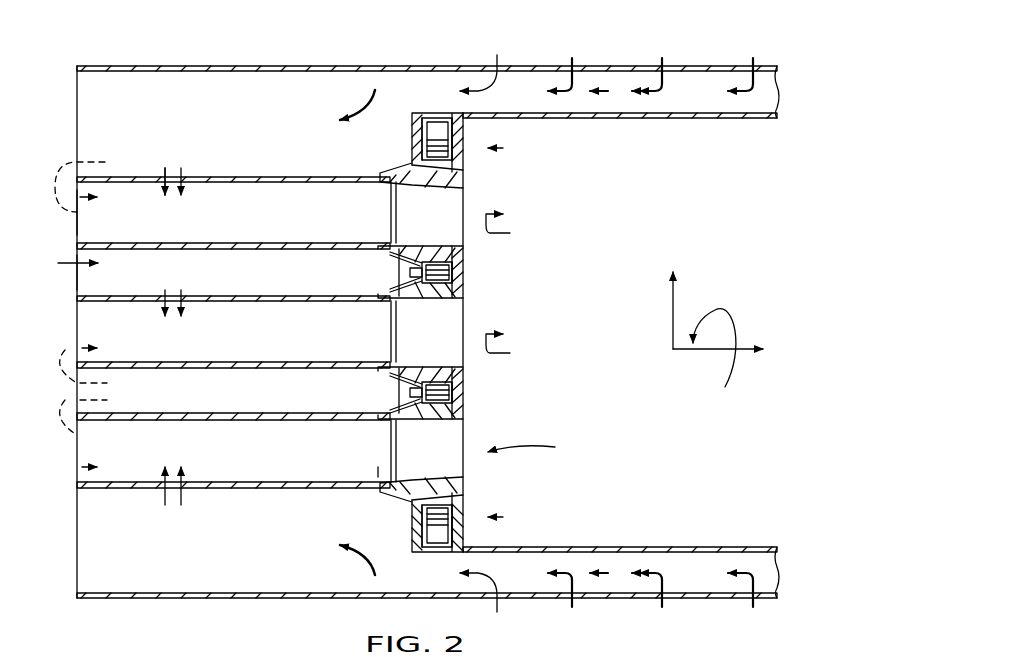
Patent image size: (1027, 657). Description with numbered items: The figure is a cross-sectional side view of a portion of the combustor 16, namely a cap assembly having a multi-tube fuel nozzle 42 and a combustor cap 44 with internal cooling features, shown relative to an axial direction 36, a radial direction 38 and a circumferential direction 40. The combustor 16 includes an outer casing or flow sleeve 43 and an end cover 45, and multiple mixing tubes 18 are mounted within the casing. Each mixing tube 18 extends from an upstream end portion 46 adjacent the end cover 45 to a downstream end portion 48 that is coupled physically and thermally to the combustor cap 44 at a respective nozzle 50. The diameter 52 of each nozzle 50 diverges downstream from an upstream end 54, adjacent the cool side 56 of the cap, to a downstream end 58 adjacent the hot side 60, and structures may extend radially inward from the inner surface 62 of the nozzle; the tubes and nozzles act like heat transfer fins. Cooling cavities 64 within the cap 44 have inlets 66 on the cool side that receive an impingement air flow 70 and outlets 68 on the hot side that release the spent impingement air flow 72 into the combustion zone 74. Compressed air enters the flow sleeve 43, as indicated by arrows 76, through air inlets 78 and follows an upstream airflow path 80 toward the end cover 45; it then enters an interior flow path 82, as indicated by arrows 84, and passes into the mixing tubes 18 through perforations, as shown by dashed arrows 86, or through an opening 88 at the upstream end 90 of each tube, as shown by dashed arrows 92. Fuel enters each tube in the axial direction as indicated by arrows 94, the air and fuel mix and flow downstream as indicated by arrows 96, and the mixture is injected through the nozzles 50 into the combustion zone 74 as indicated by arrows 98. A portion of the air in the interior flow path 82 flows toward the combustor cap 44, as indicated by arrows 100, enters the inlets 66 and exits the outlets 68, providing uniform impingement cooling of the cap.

The combustor 16 is at (110, 50).
The mixing tube 18 is at (222, 296).
The axial axis or direction 36 is at (717, 352).
The radial axis or direction 38 is at (675, 316).
The circumferential axis or direction 40 is at (737, 367).
The multi-tube fuel nozzle 42 is at (63, 263).
The outer casing or flow sleeve 43 is at (290, 65).
The combustor cap 44 is at (478, 274).
The end cover 45 is at (77, 281).
The upstream end portion 46 is at (172, 250).
The downstream end portion 48 is at (343, 177).
The nozzle 50 is at (455, 176).
The diameter 52 is at (418, 186).
The upstream end 54 is at (405, 303).
The cool side or face 56 is at (404, 392).
The downstream end 58 is at (465, 298).
The hot side or face 60 is at (466, 395).
The inner surface 62 is at (445, 490).
The cooling cavity 64 is at (431, 332).
The inlet 66 is at (447, 262).
The outlet 68 is at (440, 138).
The impingement air flow 70 is at (404, 270).
The spent impingement air flow 72 is at (503, 148).
The combustion zone 74 is at (607, 318).
The arrows indicating air entering the flow sleeve 76 is at (727, 118).
The air inlet 78 is at (662, 66).
The upstream airflow path 80 is at (483, 334).
The interior flow path 82 is at (205, 268).
The arrows indicating air flow into the interior flow path 84 is at (368, 91).
The dashed arrows indicating air entering perforations 86 is at (182, 172).
The opening 88 is at (77, 232).
The upstream end 90 is at (77, 212).
The dashed arrows indicating air entering the opening 92 is at (95, 155).
The arrows indicating fuel flow 94 is at (110, 208).
The arrows indicating air-fuel mixture flow 96 is at (276, 210).
The arrows indicating injection into the combustion zone 98 is at (533, 337).
The arrows indicating air flow toward the combustor cap 100 is at (280, 272).